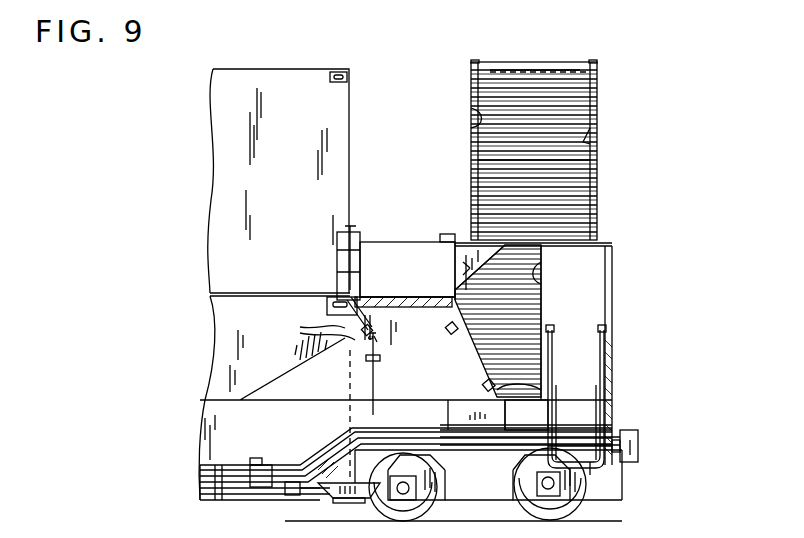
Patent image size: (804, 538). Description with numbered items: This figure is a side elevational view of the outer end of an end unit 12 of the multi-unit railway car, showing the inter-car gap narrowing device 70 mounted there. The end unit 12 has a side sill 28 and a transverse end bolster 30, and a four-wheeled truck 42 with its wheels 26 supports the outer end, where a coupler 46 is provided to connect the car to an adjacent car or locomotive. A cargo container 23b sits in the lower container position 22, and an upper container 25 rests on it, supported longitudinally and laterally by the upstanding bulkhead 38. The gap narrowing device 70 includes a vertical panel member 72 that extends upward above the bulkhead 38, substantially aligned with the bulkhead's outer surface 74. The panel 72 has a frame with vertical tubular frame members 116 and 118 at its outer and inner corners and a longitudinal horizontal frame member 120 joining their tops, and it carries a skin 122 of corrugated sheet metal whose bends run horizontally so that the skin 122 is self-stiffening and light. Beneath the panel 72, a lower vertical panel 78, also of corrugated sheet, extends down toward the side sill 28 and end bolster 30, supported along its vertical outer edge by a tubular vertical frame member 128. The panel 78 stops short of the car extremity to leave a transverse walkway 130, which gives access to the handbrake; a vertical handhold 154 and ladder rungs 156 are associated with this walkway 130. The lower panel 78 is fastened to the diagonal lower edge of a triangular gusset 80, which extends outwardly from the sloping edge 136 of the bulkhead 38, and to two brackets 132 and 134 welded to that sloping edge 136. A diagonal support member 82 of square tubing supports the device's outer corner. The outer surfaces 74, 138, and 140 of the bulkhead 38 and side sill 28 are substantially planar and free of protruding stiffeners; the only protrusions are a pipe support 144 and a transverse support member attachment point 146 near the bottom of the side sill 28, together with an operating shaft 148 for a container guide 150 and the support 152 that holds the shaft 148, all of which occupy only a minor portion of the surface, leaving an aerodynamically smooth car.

The end unit 12 is at (392, 70).
The lower container position 22 is at (238, 293).
The cargo container 23b is at (226, 323).
The cargo container 25 is at (279, 69).
The wheel 26 is at (588, 492).
The side sill 28 is at (220, 462).
The end bolster 30 is at (507, 417).
The bulkhead structure 38 is at (393, 252).
The four-wheeled truck 42 is at (485, 495).
The coupler 46 is at (640, 447).
The inter-car gap narrowing device 70 is at (462, 80).
The vertical panel member 72 is at (506, 83).
The outer surface 74 is at (406, 283).
The lower vertical panel 78 is at (518, 300).
The triangular vertical gusset 80 is at (463, 268).
The diagonal support member 82 is at (612, 282).
The vertical tubular frame member 116 is at (592, 138).
The vertical tubular frame member 118 is at (471, 111).
The longitudinal horizontal frame member 120 is at (531, 72).
The skin 122 is at (486, 161).
The vertical frame member 128 is at (542, 275).
The transverse walkway 130 is at (588, 420).
The bracket 132 is at (447, 328).
The bracket 134 is at (485, 386).
The sloping edge 136 is at (548, 346).
The outer surface 138 is at (432, 366).
The outer surface 140 is at (254, 447).
The pipe support 144 is at (262, 458).
The transverse support member attachment point 146 is at (296, 482).
The operating shaft 148 is at (377, 380).
The container guide 150 is at (337, 249).
The support 152 is at (330, 319).
The vertical handhold 154 is at (597, 392).
The ladder rung 156 is at (603, 470).